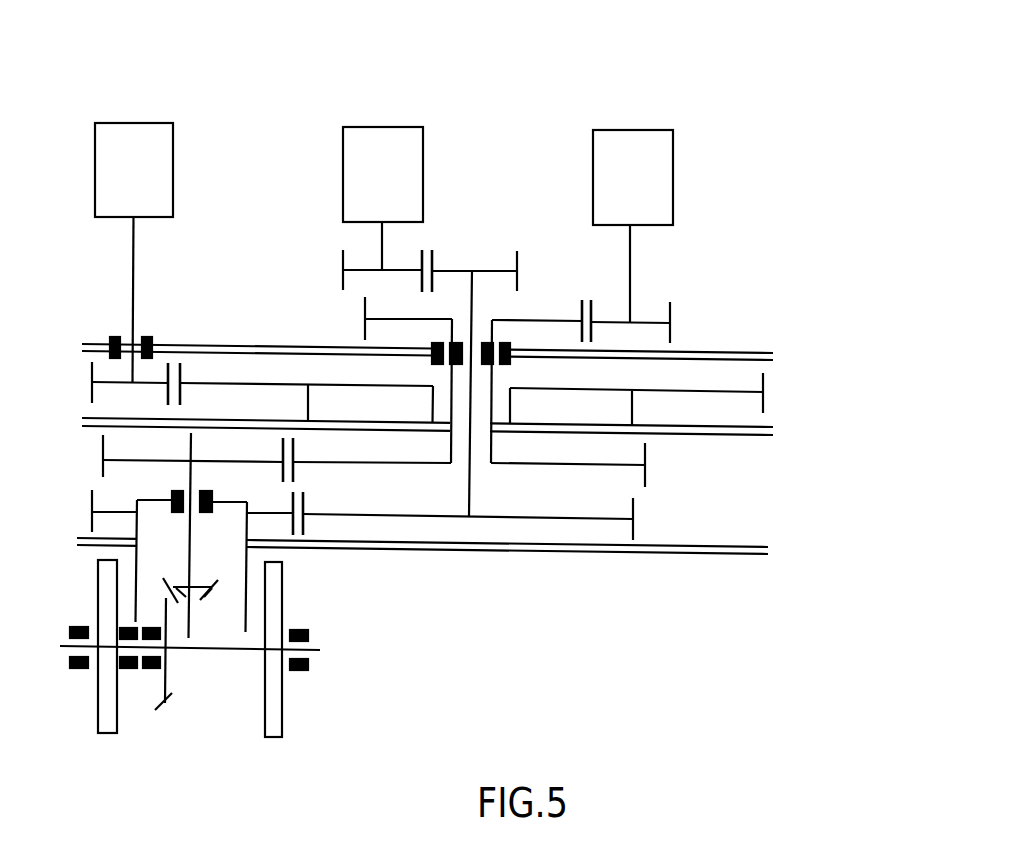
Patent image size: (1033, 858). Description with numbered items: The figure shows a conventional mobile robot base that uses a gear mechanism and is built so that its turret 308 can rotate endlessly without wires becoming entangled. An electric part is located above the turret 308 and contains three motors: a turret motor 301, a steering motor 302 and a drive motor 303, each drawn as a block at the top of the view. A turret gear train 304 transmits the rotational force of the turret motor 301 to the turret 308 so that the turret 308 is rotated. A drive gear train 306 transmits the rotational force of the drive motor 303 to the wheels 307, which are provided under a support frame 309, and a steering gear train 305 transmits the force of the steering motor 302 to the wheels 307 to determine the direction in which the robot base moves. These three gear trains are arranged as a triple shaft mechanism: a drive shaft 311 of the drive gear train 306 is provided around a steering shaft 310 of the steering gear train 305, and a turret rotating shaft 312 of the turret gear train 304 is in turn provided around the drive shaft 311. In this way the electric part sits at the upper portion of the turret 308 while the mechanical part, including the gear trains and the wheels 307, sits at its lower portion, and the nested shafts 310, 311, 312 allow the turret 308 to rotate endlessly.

The turret motor 301 is at (140, 141).
The steering motor 302 is at (381, 146).
The drive motor 303 is at (628, 152).
The turret gear train 304 is at (204, 368).
The steering gear train 305 is at (452, 252).
The drive gear train 306 is at (650, 302).
The wheels 307 is at (299, 714).
The turret 308 is at (743, 355).
The support frame 309 is at (702, 532).
The steering shaft 310 is at (470, 490).
The drive shaft 311 is at (493, 393).
The turret rotating shaft 312 is at (430, 395).